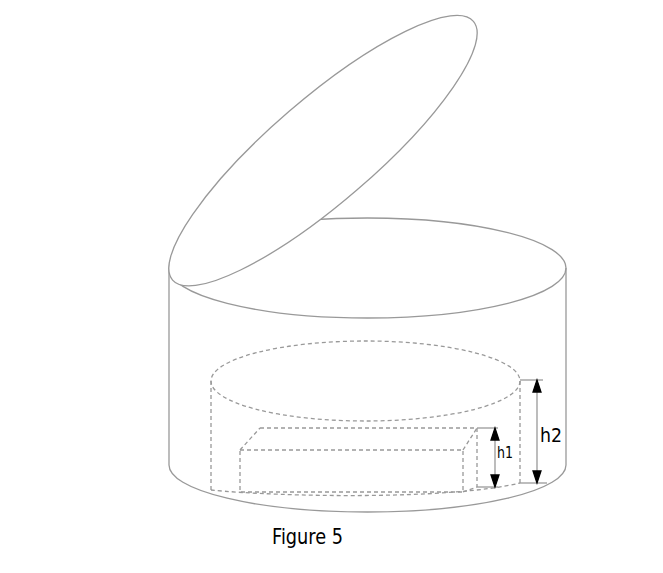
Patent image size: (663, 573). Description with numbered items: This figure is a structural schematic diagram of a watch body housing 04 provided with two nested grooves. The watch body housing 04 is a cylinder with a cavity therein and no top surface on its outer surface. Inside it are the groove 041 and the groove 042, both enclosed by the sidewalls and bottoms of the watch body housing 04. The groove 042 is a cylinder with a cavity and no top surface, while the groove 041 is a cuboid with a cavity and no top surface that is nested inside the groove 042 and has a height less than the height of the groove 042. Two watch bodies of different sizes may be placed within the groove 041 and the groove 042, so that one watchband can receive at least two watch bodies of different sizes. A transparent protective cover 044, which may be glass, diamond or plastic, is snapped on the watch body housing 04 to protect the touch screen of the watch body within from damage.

The watch body housing 04 is at (158, 323).
The transparent protective cover 044 is at (347, 99).
The groove 042 is at (199, 418).
The groove 041 is at (228, 473).